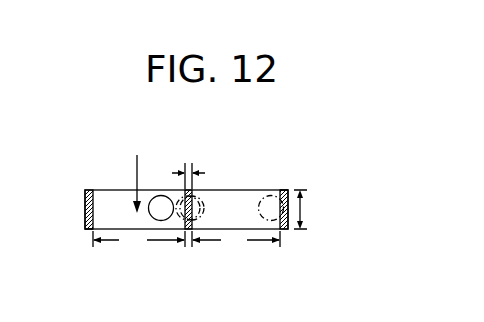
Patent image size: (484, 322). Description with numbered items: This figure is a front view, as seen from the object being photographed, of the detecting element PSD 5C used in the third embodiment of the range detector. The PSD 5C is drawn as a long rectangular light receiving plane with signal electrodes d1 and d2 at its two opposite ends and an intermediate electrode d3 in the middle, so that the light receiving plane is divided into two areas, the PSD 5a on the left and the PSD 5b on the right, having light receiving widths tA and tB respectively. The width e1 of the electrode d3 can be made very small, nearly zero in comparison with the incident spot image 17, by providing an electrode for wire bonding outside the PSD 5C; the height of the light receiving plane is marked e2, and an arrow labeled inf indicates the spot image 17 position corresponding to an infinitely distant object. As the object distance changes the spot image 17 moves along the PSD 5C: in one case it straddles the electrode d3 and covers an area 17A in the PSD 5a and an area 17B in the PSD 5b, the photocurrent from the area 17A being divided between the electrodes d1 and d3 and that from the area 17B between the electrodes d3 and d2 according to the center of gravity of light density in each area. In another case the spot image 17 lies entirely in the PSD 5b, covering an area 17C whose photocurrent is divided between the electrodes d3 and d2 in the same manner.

The detecting element PSD 5C is at (325, 146).
The PSD light receiving area 5a is at (107, 202).
The PSD light receiving area 5b is at (247, 202).
The incident spot image 17 is at (162, 205).
The spot image area 17A is at (181, 217).
The spot image area 17B is at (200, 218).
The spot image area 17C is at (266, 220).
The signal electrode d1 is at (88, 230).
The signal electrode d2 is at (283, 193).
The intermediate electrode d3 is at (188, 232).
The width of intermediate electrode e1 is at (188, 171).
The height of array e2 is at (300, 210).
The light receiving area width tA is at (139, 241).
The light receiving area width tB is at (236, 241).
The infinity focus position indicator inf is at (137, 172).